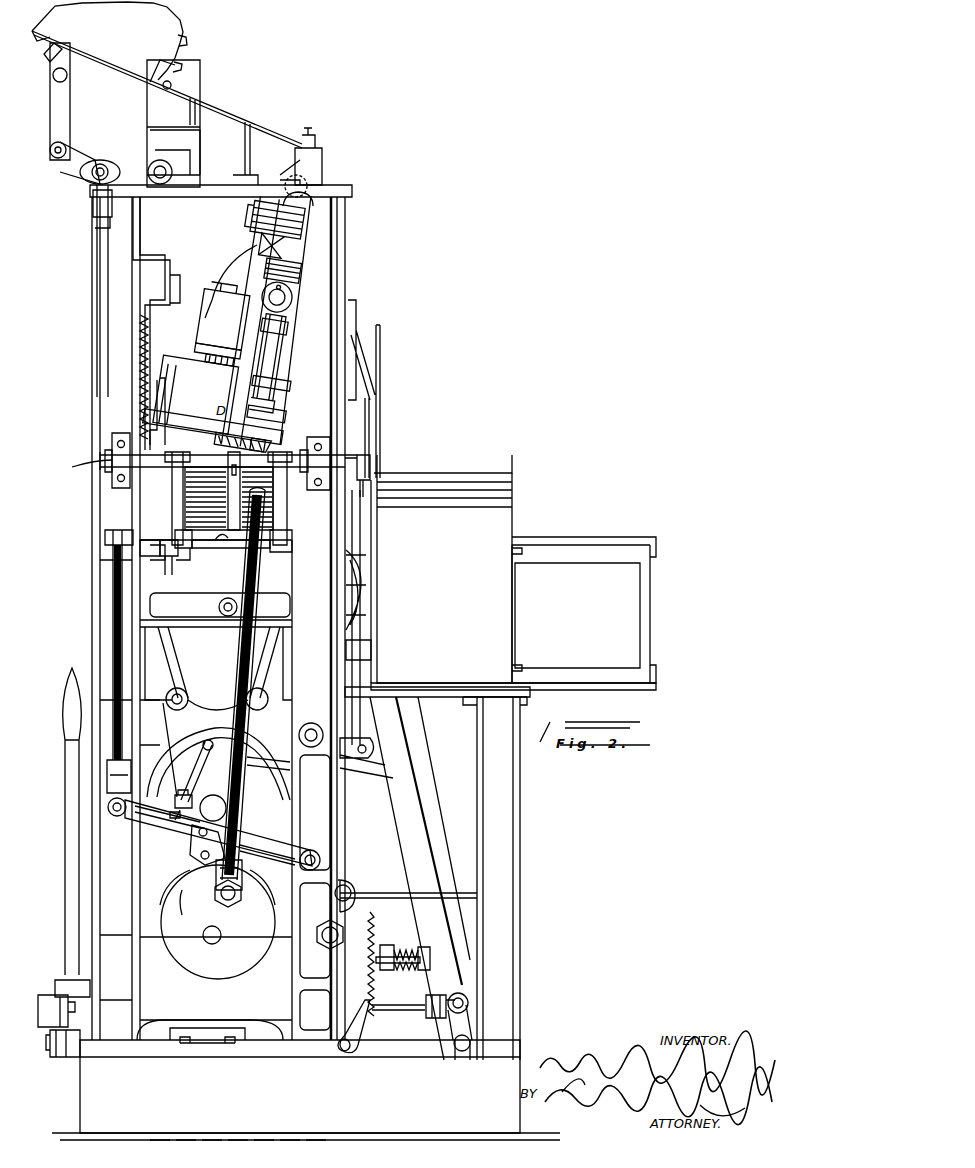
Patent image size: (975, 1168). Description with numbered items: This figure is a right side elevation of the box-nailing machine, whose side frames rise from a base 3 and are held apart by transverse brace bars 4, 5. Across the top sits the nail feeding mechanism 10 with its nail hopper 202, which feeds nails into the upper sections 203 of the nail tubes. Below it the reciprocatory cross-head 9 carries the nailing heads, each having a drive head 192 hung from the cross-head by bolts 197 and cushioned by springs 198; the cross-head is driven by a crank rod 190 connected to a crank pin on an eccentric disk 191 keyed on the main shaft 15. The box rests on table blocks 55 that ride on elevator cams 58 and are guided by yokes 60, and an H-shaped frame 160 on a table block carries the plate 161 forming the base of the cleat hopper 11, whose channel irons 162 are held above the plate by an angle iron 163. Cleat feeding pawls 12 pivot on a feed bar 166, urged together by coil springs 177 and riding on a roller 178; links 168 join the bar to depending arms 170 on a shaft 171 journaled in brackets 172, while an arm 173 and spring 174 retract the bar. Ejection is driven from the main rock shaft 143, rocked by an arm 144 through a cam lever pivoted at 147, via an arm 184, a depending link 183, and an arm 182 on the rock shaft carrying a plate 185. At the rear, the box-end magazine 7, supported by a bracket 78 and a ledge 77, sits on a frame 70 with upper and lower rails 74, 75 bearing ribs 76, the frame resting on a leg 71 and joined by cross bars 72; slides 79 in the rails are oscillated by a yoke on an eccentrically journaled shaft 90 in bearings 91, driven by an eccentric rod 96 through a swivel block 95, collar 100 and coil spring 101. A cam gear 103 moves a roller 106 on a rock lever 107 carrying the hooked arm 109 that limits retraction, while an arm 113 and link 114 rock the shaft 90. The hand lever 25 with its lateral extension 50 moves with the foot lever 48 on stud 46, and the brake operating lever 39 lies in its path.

The base 3 is at (172, 1030).
The transverse brace bar 4 is at (178, 298).
The transverse brace bar 5 is at (356, 312).
The magazine 7 is at (490, 472).
The reciprocatory cross-head 9 is at (294, 285).
The nail feeding mechanism 10 is at (215, 122).
The cleat hopper 11 is at (168, 385).
The cleat feeding pawl 12 is at (150, 533).
The main shaft 15 is at (208, 940).
The hand lever 25 is at (62, 851).
The brake operating lever 39 is at (58, 985).
The stud 46 is at (48, 1044).
The extension forming a foot lever 48 is at (52, 1008).
The lateral extension 50 is at (258, 810).
The table block 55 is at (217, 699).
The elevator cam 58 is at (158, 760).
The guide yoke 60 is at (185, 768).
The frame 70 is at (650, 612).
The leg 71 is at (520, 845).
The cross bar 72 is at (652, 548).
The upper horizontal rail 74 is at (588, 540).
The lower horizontal rail 75 is at (604, 677).
The longitudinal rib 76 is at (522, 551).
The lateral ledge 77 is at (438, 697).
The bracket 78 is at (440, 508).
The slide 79 is at (355, 580).
The shaft 90 is at (465, 1052).
The bearing 91 is at (432, 852).
The swivel block 95 is at (422, 945).
The eccentric rod 96 is at (395, 952).
The collar 100 is at (386, 945).
The coil spring 101 is at (406, 945).
The gear 103 is at (355, 1020).
The anti-friction roller 106 is at (204, 345).
The rock lever 107 is at (355, 910).
The arm 109 is at (396, 892).
The arm 113 is at (450, 1012).
The link 114 is at (400, 1008).
The main rock shaft 143 is at (312, 723).
The arm 144 is at (272, 760).
The pivot 147 is at (322, 945).
The H-shaped frame 160 is at (260, 662).
The horizontal plate 161 is at (214, 545).
The channel iron 162 is at (210, 410).
The angle iron 163 is at (185, 500).
The feed bar 166 is at (248, 549).
The link 168 is at (292, 545).
The depending arm 170 is at (172, 512).
The shaft 171 is at (290, 452).
The bracket 172 is at (121, 433).
The arm 173 is at (87, 465).
The spring 174 is at (138, 390).
The coil spring 177 is at (165, 562).
The roller 178 is at (135, 556).
The arm 182 is at (372, 458).
The link 183 is at (362, 653).
The arm 184 is at (352, 750).
The plate 185 is at (268, 438).
The crank rod 190 is at (262, 608).
The eccentric disk 191 is at (262, 980).
The drive head 192 is at (235, 412).
The bolt 197 is at (226, 368).
The cushion spring 198 is at (216, 355).
The nail hopper 202 is at (165, 37).
The upper section of nail tube 203 is at (276, 258).